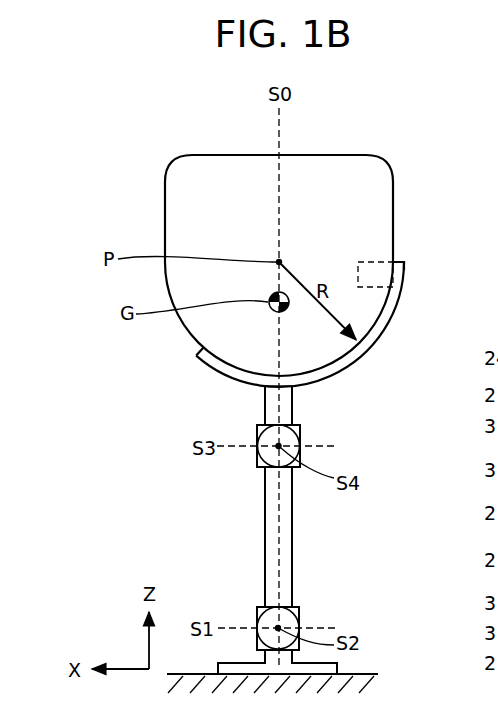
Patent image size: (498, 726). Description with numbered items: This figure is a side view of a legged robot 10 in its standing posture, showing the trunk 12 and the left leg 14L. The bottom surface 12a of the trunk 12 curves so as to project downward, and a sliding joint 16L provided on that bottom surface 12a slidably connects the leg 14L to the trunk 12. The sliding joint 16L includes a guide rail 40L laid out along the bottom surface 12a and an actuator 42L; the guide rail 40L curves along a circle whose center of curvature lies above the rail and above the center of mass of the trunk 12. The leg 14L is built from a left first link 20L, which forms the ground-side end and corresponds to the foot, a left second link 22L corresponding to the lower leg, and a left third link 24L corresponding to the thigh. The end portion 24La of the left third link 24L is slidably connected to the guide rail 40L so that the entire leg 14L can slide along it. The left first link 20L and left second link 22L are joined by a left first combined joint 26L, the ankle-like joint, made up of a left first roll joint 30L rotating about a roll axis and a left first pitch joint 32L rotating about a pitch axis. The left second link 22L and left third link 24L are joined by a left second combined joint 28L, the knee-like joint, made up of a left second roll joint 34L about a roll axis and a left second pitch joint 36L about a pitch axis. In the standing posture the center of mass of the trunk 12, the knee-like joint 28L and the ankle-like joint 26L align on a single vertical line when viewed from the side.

The legged robot 10 is at (367, 118).
The trunk 12 is at (180, 210).
The bottom surface 12a is at (193, 342).
The leg 14L is at (294, 562).
The sliding joint 16L is at (402, 260).
The left first link 20L is at (338, 667).
The left second link 22L is at (293, 527).
The left third link 24L is at (293, 410).
The end portion 24La is at (295, 387).
The left first combined joint 26L is at (301, 612).
The left second combined joint 28L is at (302, 430).
The left first roll joint 30L is at (257, 607).
The left first pitch joint 32L is at (257, 645).
The left second roll joint 34L is at (257, 430).
The left second pitch joint 36L is at (257, 463).
The guide rail 40L is at (405, 290).
The actuator 42L is at (375, 260).